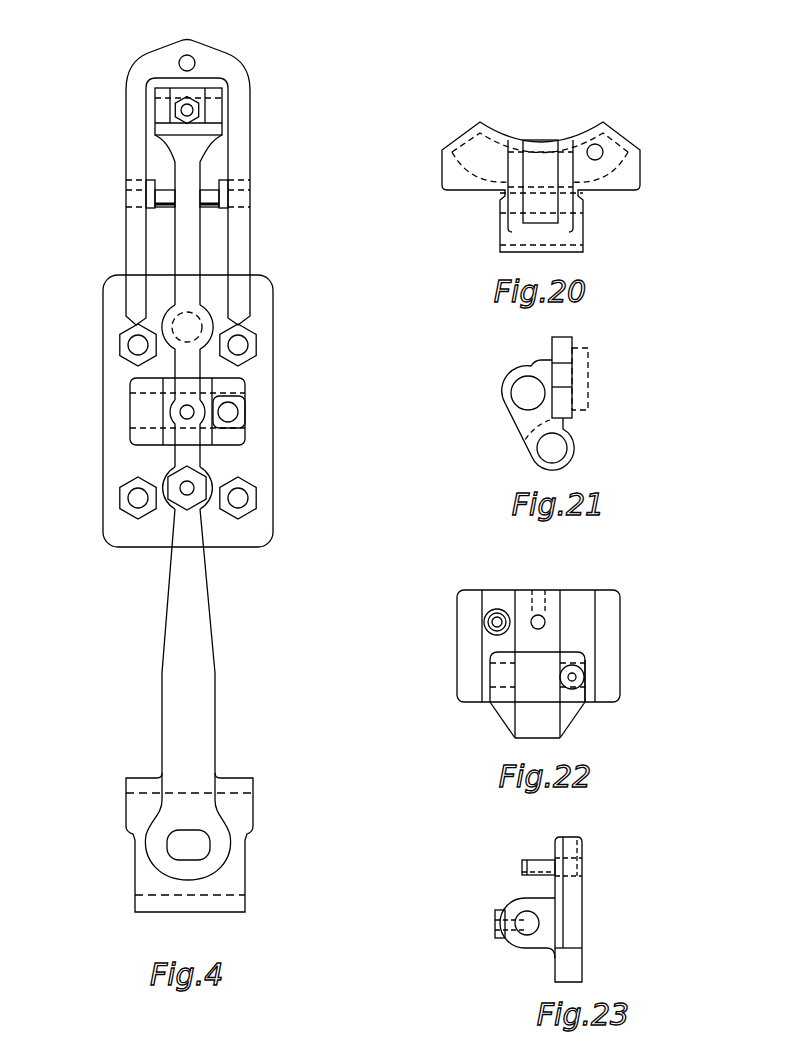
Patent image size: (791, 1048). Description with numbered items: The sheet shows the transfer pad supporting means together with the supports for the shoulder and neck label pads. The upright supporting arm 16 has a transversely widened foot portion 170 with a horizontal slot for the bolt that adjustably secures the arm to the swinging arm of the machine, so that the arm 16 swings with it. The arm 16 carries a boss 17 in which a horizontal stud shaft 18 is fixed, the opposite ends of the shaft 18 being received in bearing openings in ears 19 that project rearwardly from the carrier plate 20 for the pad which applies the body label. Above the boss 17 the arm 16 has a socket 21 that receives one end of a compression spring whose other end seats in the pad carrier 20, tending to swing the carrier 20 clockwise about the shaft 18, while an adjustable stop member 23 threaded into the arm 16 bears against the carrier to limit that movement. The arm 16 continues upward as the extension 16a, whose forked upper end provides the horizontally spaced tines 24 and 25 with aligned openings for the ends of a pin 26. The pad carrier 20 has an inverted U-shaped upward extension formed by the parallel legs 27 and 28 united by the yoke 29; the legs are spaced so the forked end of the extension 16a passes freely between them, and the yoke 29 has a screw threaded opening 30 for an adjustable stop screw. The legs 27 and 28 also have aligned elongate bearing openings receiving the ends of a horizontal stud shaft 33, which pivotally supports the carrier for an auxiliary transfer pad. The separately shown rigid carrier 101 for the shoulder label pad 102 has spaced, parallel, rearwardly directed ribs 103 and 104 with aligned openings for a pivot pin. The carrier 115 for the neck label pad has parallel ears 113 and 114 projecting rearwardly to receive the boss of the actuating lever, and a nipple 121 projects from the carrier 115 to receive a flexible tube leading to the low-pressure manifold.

In FIG. 4, the upright supporting arm 16 is at (175, 597).
In FIG. 4, the extension 16a is at (185, 233).
In FIG. 4, the boss 17 is at (168, 433).
In FIG. 4, the horizontal stud shaft 18 is at (137, 403).
In FIG. 4, the ears 19 is at (140, 385).
In FIG. 4, the carrier plate 20 is at (268, 447).
In FIG. 4, the socket 21 is at (150, 314).
In FIG. 4, the adjustable stop member 23 is at (183, 492).
In FIG. 4, the tine 24 is at (162, 132).
In FIG. 4, the tine 25 is at (217, 132).
In FIG. 4, the pin 26 is at (200, 123).
In FIG. 4, the leg 27 is at (138, 232).
In FIG. 4, the leg 28 is at (245, 245).
In FIG. 4, the yoke 29 is at (167, 62).
In FIG. 4, the screw threaded opening 30 is at (188, 55).
In FIG. 4, the horizontal stud shaft 33 is at (167, 188).
In FIG. 4, the foot portion 170 is at (245, 813).
In FIG. 20, the carrier 101 is at (468, 182).
In FIG. 21, the carrier 101 is at (562, 345).
In FIG. 21, the shoulder label pad 102 is at (583, 370).
In FIG. 20, the rib 103 is at (513, 170).
In FIG. 20, the rib 104 is at (567, 160).
In FIG. 21, the rib 104 is at (527, 368).
In FIG. 22, the ear 113 is at (502, 695).
In FIG. 22, the ear 114 is at (575, 693).
In FIG. 23, the ear 114 is at (540, 943).
In FIG. 22, the carrier 115 is at (465, 637).
In FIG. 23, the carrier 115 is at (575, 966).
In FIG. 22, the nipple 121 is at (497, 608).
In FIG. 23, the nipple 121 is at (537, 860).